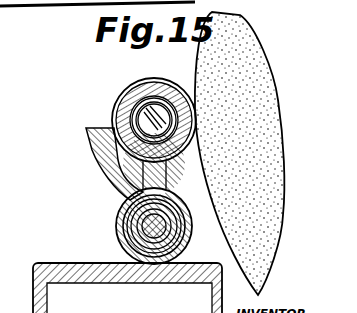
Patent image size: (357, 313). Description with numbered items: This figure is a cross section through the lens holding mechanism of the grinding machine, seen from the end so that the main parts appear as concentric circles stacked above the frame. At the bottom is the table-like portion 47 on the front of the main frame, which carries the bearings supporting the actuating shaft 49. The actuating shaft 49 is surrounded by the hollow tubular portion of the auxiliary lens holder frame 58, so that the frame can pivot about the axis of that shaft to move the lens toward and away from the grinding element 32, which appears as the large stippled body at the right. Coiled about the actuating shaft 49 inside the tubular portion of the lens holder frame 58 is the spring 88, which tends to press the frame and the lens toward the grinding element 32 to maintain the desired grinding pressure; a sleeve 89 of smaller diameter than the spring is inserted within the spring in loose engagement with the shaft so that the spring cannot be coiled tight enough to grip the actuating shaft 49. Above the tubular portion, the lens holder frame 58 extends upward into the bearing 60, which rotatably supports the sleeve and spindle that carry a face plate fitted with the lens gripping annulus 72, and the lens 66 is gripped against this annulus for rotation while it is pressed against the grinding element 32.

The grinding element 32 is at (271, 64).
The table-like portion 47 is at (74, 265).
The actuating shaft 49 is at (128, 233).
The auxiliary lens holder frame 58 is at (128, 198).
The bearing 60 is at (118, 93).
The lens 66 is at (137, 80).
The lens gripping annulus 72 is at (146, 118).
The spring 88 is at (116, 208).
The sleeve 89 is at (150, 228).